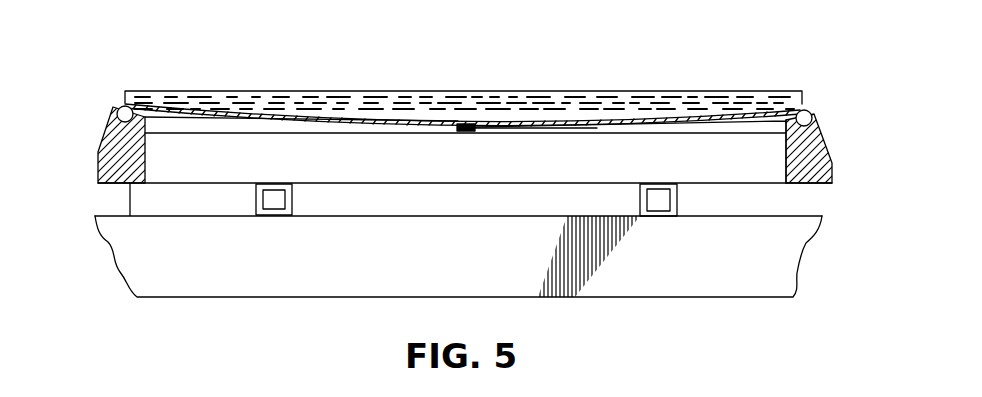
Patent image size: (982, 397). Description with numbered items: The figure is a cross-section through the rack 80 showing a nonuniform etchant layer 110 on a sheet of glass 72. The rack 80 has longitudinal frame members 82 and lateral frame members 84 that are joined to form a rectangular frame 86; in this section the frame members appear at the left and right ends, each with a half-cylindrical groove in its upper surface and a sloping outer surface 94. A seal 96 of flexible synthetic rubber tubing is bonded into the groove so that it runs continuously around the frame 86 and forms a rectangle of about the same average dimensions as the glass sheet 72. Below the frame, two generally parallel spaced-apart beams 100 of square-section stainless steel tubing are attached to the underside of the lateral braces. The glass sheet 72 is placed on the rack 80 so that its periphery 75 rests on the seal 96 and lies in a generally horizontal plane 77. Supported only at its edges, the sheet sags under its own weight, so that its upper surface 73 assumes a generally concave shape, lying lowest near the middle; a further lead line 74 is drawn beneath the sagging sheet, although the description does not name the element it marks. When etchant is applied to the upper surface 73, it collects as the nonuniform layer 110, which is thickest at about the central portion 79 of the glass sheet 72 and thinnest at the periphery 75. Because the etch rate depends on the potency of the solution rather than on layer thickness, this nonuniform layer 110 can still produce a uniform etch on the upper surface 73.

The sheet of glass 72 is at (733, 93).
The upper surface 73 is at (548, 118).
The intermediate layer 74 is at (597, 129).
The periphery 75 is at (122, 105).
The horizontal plane 77 is at (110, 93).
The central portion 79 is at (471, 103).
The rack 80 is at (90, 206).
The longitudinal frame member 82 is at (130, 190).
The lateral frame member 84 is at (205, 127).
The rectangular frame 86 is at (97, 170).
The sloping outer surface 94 is at (820, 136).
The seal 96 is at (110, 113).
The beam 100 is at (276, 215).
The nonuniform etchant layer 110 is at (628, 102).